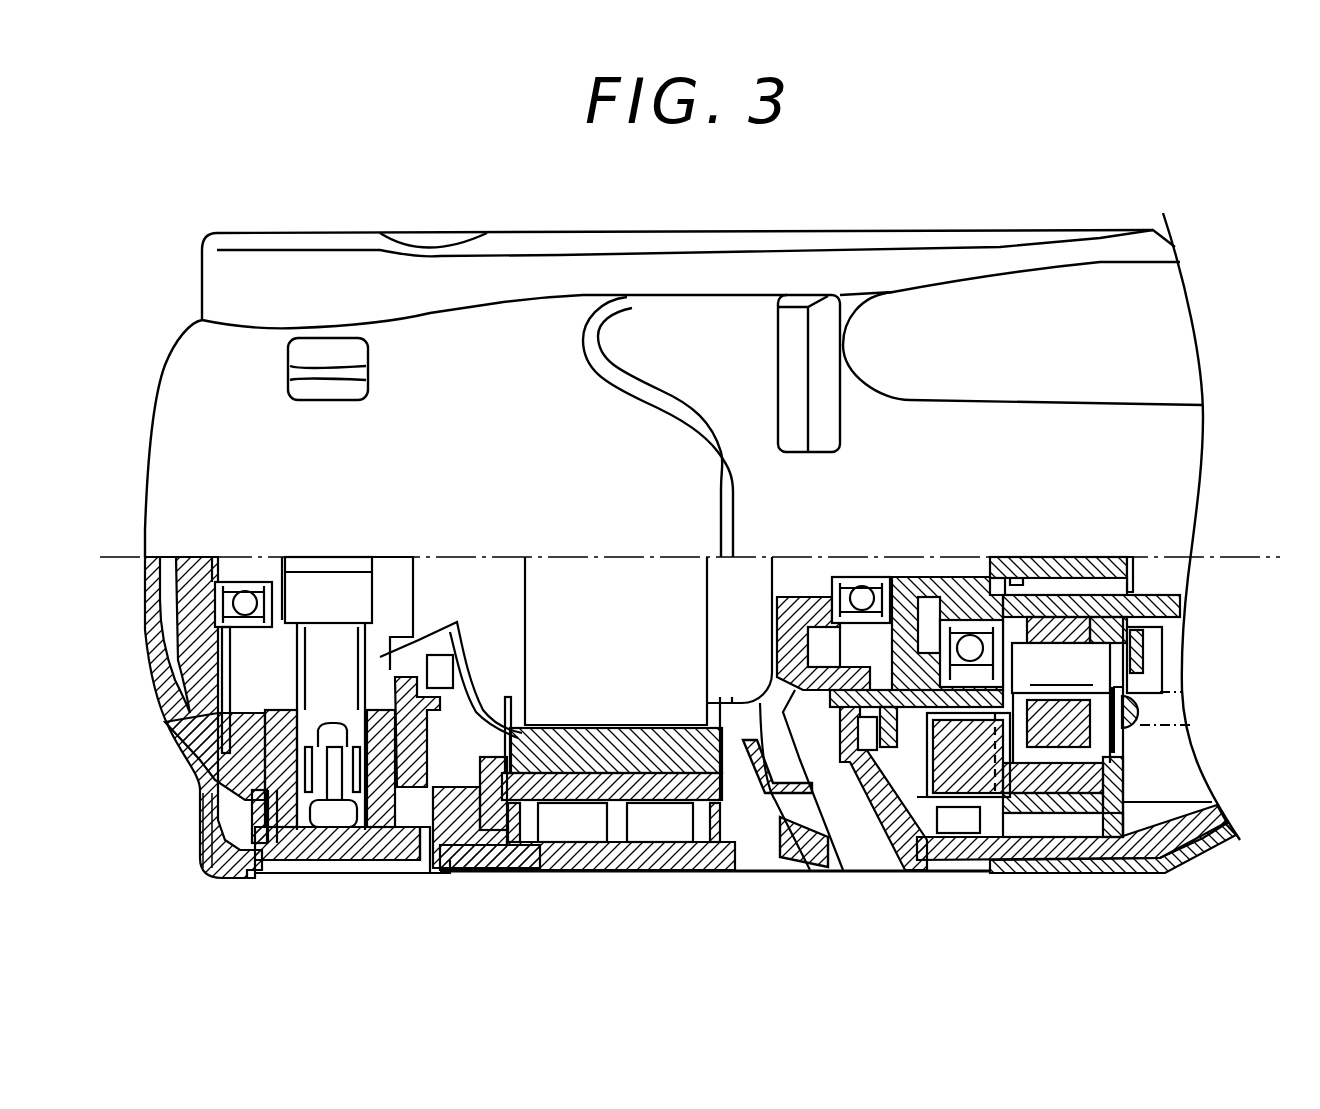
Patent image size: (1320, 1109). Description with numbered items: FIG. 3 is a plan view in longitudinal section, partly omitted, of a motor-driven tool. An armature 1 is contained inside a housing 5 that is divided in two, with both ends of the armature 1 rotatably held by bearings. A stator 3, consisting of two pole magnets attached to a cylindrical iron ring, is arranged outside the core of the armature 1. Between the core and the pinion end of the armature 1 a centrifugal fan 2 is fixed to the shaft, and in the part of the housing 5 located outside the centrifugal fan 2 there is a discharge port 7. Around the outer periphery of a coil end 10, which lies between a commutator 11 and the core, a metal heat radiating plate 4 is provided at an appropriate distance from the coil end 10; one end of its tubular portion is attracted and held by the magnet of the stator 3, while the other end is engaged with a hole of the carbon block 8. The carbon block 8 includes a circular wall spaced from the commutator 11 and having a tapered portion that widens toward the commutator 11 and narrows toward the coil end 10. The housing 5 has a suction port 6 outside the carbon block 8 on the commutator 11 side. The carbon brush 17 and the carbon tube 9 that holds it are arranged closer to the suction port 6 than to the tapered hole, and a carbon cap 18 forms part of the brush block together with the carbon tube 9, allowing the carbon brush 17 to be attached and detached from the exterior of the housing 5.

The armature 1 is at (615, 593).
The centrifugal fan 2 is at (825, 800).
The stator 3 is at (700, 790).
The heat radiating plate 4 is at (473, 727).
The housing 5 is at (1112, 223).
The suction port 6 is at (310, 352).
The discharge port 7 is at (793, 320).
The carbon block 8 is at (235, 812).
The carbon tube 9 is at (290, 663).
The coil end 10 is at (502, 670).
The commutator 11 is at (328, 588).
The carbon brush 17 is at (355, 695).
The carbon cap 18 is at (297, 843).